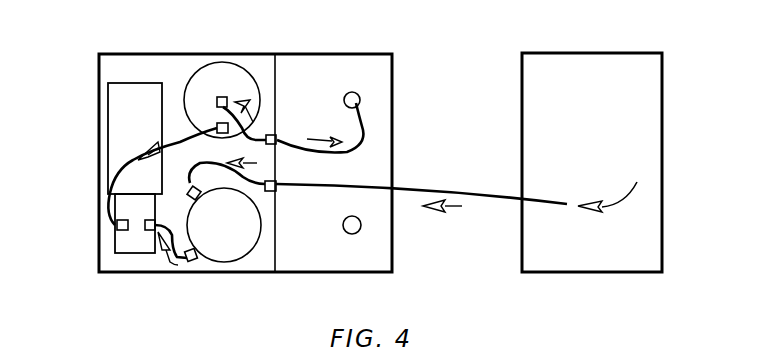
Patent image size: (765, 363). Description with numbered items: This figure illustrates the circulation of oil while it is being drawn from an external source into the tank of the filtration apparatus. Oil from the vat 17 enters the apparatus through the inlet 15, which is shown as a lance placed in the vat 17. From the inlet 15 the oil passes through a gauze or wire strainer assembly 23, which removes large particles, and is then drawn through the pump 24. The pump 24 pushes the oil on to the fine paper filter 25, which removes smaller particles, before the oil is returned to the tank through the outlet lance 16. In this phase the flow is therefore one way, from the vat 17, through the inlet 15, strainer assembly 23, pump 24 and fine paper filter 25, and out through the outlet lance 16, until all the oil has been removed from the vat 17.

The inlet 15 is at (490, 197).
The outlet lance 16 is at (360, 95).
The vat 17 is at (647, 160).
The strainer assembly 23 is at (217, 243).
The pump 24 is at (117, 145).
The fine paper filter 25 is at (243, 83).